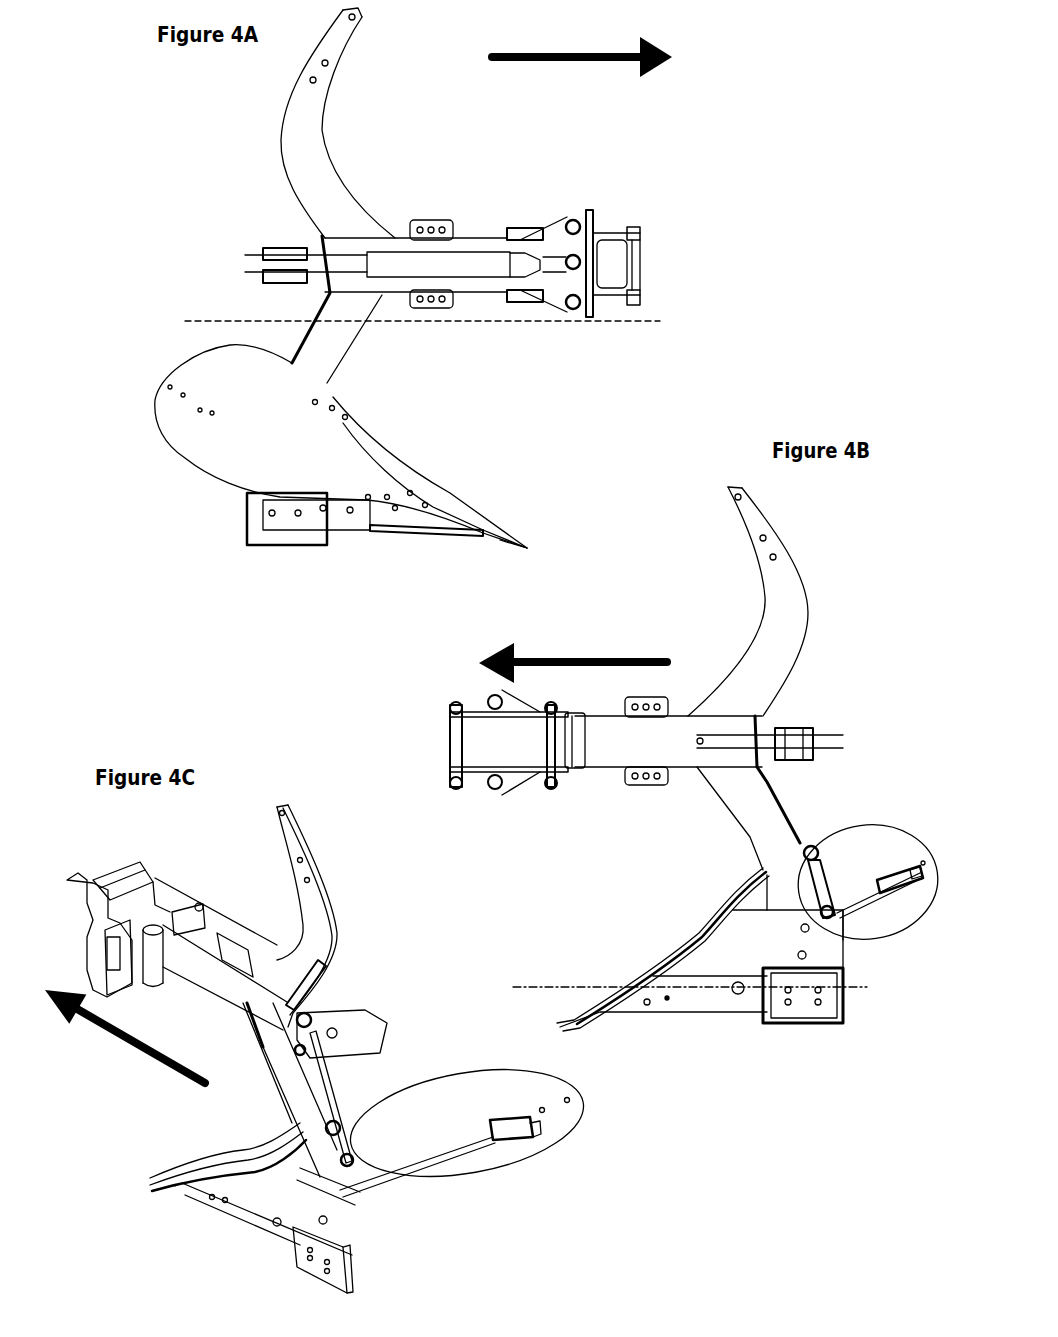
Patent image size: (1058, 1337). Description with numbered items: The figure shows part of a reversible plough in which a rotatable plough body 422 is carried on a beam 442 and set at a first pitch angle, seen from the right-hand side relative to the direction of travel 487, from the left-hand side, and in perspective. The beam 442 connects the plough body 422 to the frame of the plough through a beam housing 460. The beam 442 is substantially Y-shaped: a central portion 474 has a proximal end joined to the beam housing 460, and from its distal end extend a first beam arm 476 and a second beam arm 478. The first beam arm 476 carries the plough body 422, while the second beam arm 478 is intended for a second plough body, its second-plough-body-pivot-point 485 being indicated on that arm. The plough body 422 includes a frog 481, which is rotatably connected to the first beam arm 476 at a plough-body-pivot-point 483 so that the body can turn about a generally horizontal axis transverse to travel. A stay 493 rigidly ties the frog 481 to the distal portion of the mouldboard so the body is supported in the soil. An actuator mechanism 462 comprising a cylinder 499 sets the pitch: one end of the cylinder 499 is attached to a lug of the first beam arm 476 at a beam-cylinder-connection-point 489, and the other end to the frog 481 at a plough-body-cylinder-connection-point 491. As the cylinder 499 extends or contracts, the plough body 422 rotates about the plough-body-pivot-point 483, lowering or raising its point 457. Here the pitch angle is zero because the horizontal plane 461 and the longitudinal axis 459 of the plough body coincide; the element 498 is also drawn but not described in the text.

In FIG. 4A, the second beam arm 478 is at (282, 130).
In FIG. 4B, the second beam arm 478 is at (797, 577).
In FIG. 4A, the beam 442 is at (485, 221).
In FIG. 4A, the direction of travel 487 is at (552, 67).
In FIG. 4B, the direction of travel 487 is at (530, 652).
In FIG. 4C, the direction of travel 487 is at (192, 1062).
In FIG. 4A, the beam housing 460 is at (622, 227).
In FIG. 4A, the first beam arm 476 is at (353, 337).
In FIG. 4B, the first beam arm 476 is at (717, 800).
In FIG. 4A, the central portion 474 is at (472, 293).
In FIG. 4A, the plough body 422 is at (178, 459).
In FIG. 4B, the plough body 422 is at (905, 950).
In FIG. 4C, the plough body 422 is at (537, 1178).
In FIG. 4A, the plough-body-pivot-point 483 is at (340, 520).
In FIG. 4B, the plough-body-pivot-point 483 is at (738, 995).
In FIG. 4C, the plough-body-pivot-point 483 is at (270, 1215).
In FIG. 4A, the point 457 is at (510, 543).
In FIG. 4B, the point 457 is at (597, 1010).
In FIG. 4B, the second-plough-body-pivot-point 485 is at (720, 500).
In FIG. 4C, the second-plough-body-pivot-point 485 is at (473, 1087).
In FIG. 4B, the beam-cylinder-connection-point 489 is at (805, 847).
In FIG. 4C, the beam-cylinder-connection-point 489 is at (295, 1130).
In FIG. 4B, the actuator mechanism 462 is at (838, 857).
In FIG. 4C, the actuator mechanism 462 is at (360, 1146).
In FIG. 4B, the cylinder 499 is at (843, 875).
In FIG. 4C, the cylinder 499 is at (262, 1143).
In FIG. 4B, the frog 481 is at (733, 943).
In FIG. 4C, the frog 481 is at (270, 1183).
In FIG. 4B, the longitudinal axis 459 is at (533, 987).
In FIG. 4B, the horizontal plane 461 is at (690, 958).
In FIG. 4B, the adjustment rod 498 is at (897, 900).
In FIG. 4B, the plough-body-cylinder-connection-point 491 is at (850, 940).
In FIG. 4C, the plough-body-cylinder-connection-point 491 is at (330, 1207).
In FIG. 4C, the stay 493 is at (443, 1170).